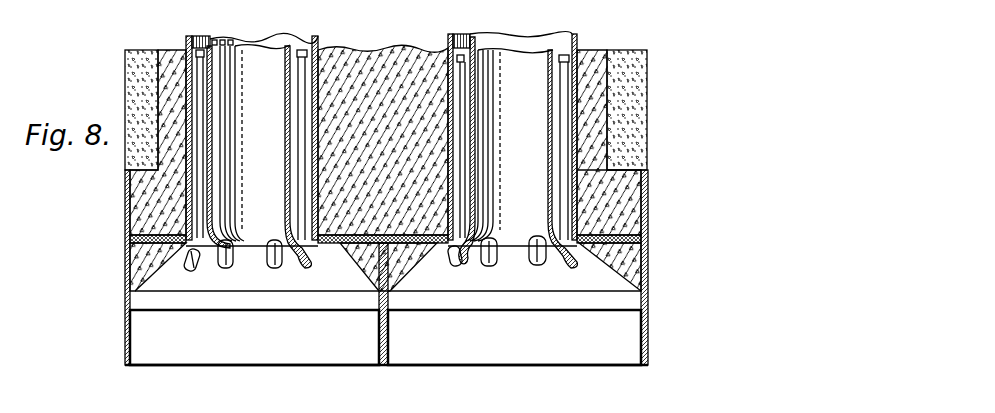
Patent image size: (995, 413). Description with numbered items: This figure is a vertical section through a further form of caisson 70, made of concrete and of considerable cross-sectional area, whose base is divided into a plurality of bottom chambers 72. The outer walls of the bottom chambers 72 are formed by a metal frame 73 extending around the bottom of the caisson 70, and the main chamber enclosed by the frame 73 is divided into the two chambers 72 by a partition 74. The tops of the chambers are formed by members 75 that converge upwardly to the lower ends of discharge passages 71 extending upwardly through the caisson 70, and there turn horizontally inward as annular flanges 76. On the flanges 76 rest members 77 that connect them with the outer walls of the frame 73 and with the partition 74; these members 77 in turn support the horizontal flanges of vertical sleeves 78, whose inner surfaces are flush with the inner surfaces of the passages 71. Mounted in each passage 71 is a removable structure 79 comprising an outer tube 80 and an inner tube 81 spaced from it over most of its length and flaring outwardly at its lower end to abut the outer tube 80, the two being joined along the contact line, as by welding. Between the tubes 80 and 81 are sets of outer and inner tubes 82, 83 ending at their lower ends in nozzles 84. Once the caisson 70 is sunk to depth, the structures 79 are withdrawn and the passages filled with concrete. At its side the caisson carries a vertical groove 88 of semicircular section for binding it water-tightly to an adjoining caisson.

The caisson 70 is at (113, 192).
The discharge passage 71 is at (320, 56).
The bottom chamber 72 is at (270, 355).
The metal frame 73 is at (647, 302).
The partition 74 is at (382, 332).
The converging member 75 is at (158, 270).
The annular flange 76 is at (580, 265).
The connecting member 77 is at (622, 240).
The vertical sleeve 78 is at (580, 230).
The removable structure 79 is at (196, 32).
The outer tube 80 is at (285, 38).
The inner tube 81 is at (237, 50).
The outer tube of set 82 is at (297, 160).
The inner tube of set 83 is at (467, 55).
The nozzle 84 is at (208, 272).
The vertical groove 88 is at (627, 114).